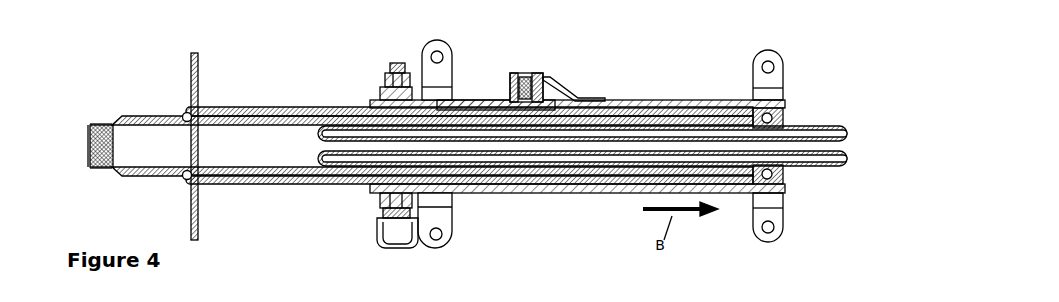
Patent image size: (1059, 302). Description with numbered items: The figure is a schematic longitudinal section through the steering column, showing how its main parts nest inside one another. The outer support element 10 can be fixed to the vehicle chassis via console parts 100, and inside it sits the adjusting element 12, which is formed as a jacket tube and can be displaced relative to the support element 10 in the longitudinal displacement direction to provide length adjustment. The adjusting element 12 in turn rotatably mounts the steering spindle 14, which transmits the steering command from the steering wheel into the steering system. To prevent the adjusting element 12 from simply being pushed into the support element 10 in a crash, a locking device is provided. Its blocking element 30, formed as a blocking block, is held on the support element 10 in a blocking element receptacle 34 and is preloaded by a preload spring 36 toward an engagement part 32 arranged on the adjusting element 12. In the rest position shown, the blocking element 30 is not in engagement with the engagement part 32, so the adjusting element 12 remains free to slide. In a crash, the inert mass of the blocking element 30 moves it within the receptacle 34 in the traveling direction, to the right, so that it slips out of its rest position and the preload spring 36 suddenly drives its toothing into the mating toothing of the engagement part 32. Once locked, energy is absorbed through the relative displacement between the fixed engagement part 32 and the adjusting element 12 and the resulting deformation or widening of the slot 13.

The support element 10 is at (688, 107).
The adjusting element 12 is at (298, 110).
The slot 13 is at (465, 108).
The steering spindle 14 is at (243, 120).
The blocking element 30 is at (517, 73).
The engagement part 32 is at (497, 107).
The blocking element receptacle 34 is at (543, 77).
The preload spring 36 is at (527, 73).
The console parts 100 is at (435, 75).